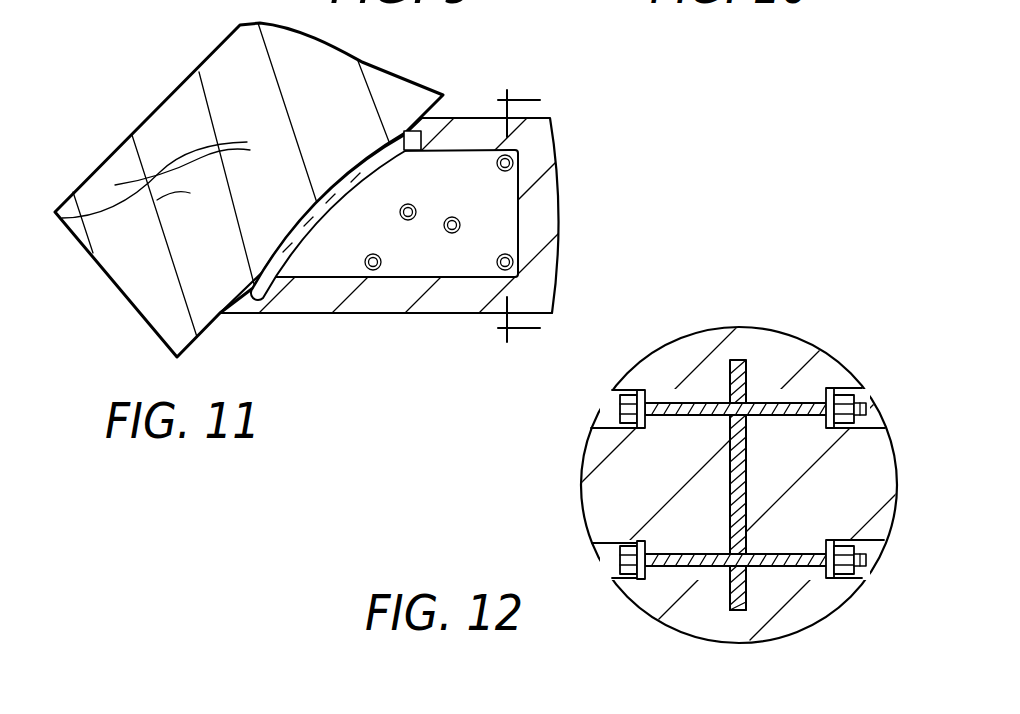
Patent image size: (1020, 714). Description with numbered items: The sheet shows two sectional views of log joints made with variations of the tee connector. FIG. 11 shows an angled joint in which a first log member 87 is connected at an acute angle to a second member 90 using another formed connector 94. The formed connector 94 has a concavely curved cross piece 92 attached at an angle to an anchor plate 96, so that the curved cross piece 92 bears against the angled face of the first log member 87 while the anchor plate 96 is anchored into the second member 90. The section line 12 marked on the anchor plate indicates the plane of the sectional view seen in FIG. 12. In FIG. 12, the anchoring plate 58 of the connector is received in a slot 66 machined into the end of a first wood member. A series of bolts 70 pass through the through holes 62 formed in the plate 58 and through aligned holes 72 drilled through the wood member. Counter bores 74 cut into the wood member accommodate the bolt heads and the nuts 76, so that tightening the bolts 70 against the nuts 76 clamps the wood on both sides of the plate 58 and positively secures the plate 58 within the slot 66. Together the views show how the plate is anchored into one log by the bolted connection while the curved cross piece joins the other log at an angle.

In FIG. 11, the section line 12- 12 is at (536, 215).
In FIG. 11, the wedge support member 87 is at (176, 332).
In FIG. 11, the second member 90 is at (433, 313).
In FIG. 11, the concavely curved cross piece 92 is at (343, 162).
In FIG. 11, the formed connector 94 is at (333, 257).
In FIG. 11, the anchor plate 96 is at (453, 163).
In FIG. 12, the anchoring plate 58 is at (735, 360).
In FIG. 12, the through holes 62 is at (600, 418).
In FIG. 12, the slot 66 is at (738, 610).
In FIG. 12, the bolts 70 is at (672, 400).
In FIG. 12, the holes 72 is at (780, 552).
In FIG. 12, the counter bores 74 is at (622, 395).
In FIG. 12, the nuts 76 is at (836, 388).